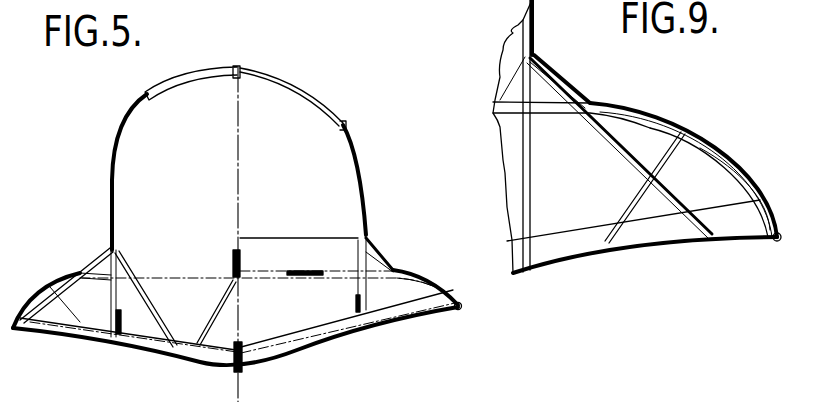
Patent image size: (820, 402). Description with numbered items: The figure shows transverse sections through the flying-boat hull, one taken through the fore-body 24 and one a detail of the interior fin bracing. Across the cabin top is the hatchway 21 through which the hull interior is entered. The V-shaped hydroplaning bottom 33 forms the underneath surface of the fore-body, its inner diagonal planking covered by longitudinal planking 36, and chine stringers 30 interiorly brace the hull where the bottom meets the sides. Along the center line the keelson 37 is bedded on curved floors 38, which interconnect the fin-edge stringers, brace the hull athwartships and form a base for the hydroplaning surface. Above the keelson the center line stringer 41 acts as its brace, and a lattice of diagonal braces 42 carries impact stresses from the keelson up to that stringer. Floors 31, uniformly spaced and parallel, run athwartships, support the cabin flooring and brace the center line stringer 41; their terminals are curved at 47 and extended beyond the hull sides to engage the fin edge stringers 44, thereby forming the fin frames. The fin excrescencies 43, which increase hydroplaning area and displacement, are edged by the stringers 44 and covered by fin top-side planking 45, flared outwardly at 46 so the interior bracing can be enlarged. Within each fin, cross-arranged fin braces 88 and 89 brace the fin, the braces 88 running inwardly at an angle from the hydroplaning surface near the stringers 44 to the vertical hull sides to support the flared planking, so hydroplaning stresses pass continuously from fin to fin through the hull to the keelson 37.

In FIG. 5, the hatchway 21 is at (192, 72).
In FIG. 5, the fore-body 24 is at (360, 146).
In FIG. 5, the chine stringers 30 is at (356, 305).
In FIG. 5, the floors 31 is at (148, 279).
In FIG. 9, the floors 31 is at (512, 101).
In FIG. 5, the hydroplaning bottom 33 is at (318, 344).
In FIG. 9, the hydroplaning bottom 33 is at (552, 273).
In FIG. 5, the longitudinal planking 36 is at (248, 372).
In FIG. 5, the keelson 37 is at (200, 364).
In FIG. 5, the floors 38 is at (58, 325).
In FIG. 5, the center line stringer 41 is at (240, 250).
In FIG. 5, the diagonal braces 42 is at (230, 308).
In FIG. 5, the fin excrescencies 43 is at (448, 287).
In FIG. 9, the fin excrescencies 43 is at (764, 170).
In FIG. 5, the fin edge stringers 44 is at (463, 308).
In FIG. 9, the fin edge stringers 44 is at (776, 242).
In FIG. 5, the fin top-side planking 45 is at (423, 275).
In FIG. 9, the fin top-side planking 45 is at (668, 118).
In FIG. 5, the outward flare of fin top-side planking 46 is at (373, 250).
In FIG. 9, the outward flare of fin top-side planking 46 is at (566, 83).
In FIG. 5, the curved floor terminals 47 is at (62, 283).
In FIG. 9, the curved floor terminals 47 is at (714, 151).
In FIG. 9, the fin braces 88 is at (611, 136).
In FIG. 9, the fin braces 89 is at (636, 213).